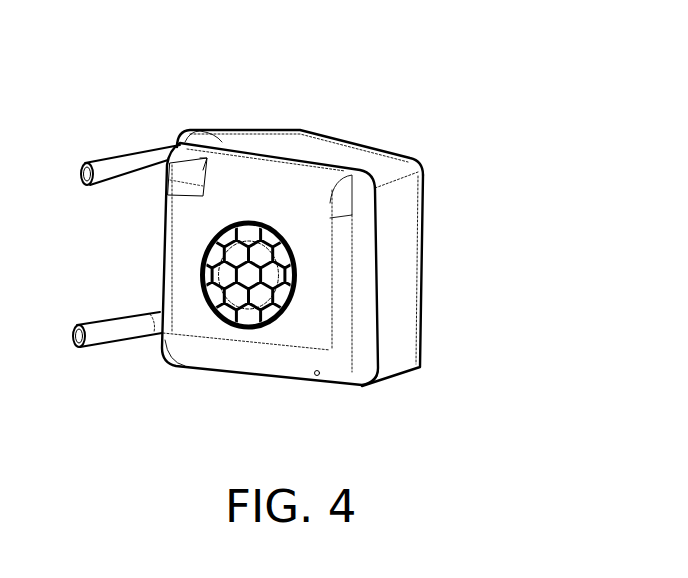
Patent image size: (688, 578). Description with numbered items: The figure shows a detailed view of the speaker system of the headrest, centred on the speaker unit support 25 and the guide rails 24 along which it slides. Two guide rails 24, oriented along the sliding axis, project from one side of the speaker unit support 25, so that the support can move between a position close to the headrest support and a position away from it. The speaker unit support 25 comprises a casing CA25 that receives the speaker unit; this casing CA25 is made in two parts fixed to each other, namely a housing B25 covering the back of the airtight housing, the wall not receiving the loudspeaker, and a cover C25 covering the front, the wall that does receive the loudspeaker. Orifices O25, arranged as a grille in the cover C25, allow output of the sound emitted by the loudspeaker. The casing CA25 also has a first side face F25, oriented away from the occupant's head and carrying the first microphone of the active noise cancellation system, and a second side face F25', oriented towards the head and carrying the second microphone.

The guide rail 24 is at (110, 138).
The speaker unit support 25 is at (348, 107).
The casing CA25 is at (267, 127).
The housing B25 is at (403, 225).
The first side face F25 is at (347, 264).
The second side face F25' is at (247, 306).
The cover C25 is at (330, 343).
The orifices O25 is at (215, 305).